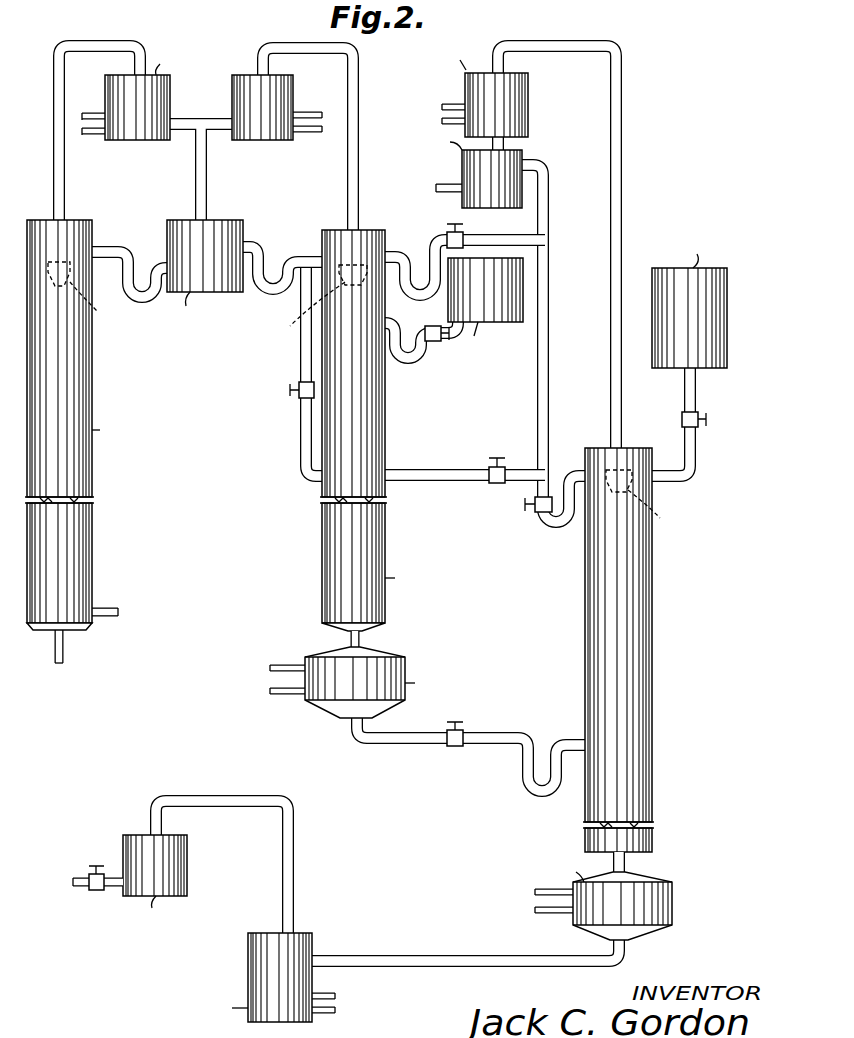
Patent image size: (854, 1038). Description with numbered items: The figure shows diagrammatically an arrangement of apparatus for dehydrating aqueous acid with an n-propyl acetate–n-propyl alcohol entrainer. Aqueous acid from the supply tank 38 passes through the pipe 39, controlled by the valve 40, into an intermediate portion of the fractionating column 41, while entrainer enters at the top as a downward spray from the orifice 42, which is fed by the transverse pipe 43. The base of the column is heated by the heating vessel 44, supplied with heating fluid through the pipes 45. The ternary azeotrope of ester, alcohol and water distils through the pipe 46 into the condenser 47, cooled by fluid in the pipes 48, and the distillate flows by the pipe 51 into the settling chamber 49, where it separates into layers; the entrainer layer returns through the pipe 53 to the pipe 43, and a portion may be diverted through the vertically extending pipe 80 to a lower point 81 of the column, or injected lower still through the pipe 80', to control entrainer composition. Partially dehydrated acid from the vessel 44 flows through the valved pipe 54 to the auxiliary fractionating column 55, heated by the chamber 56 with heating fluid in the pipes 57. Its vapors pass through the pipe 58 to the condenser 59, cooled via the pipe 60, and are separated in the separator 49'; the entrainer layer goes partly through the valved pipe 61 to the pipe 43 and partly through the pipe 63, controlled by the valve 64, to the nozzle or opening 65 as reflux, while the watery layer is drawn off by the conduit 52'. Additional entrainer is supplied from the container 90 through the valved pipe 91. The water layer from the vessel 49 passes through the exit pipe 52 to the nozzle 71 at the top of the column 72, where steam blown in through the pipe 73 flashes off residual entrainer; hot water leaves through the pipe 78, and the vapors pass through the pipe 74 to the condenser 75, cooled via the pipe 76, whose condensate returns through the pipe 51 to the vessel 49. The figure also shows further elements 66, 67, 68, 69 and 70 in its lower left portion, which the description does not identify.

The supply tank of aqueous acid 38 is at (466, 346).
The pipe 39 is at (428, 348).
The valve 40 is at (442, 348).
The fractionating column 41 is at (324, 554).
The orifice 42 is at (308, 308).
The transverse pipe 43 is at (314, 250).
The heating vessel 44 is at (324, 700).
The pipes 45 is at (262, 688).
The pipe 46 is at (348, 163).
The condenser 47 is at (268, 126).
The pipes 48 is at (307, 124).
The settling chamber 49 is at (210, 256).
The separator 49' is at (484, 167).
The pipe 51 is at (195, 163).
The exit pipe 52 is at (129, 254).
The conduit 52' is at (428, 186).
The pipe 53 is at (255, 244).
The valved pipe 54 is at (512, 743).
The auxiliary fractionating column 55 is at (592, 621).
The chamber 56 is at (664, 880).
The pipes 57 is at (530, 912).
The pipe 58 is at (622, 148).
The condenser 59 is at (522, 102).
The pipe 60 is at (444, 112).
The valved pipe 61 is at (478, 240).
The pipe 63 is at (549, 380).
The valve 64 is at (525, 506).
The nozzle or opening 65 is at (646, 513).
The pipe 66 is at (420, 958).
The redistillation still 67 is at (258, 950).
The heating connections 68 is at (334, 1004).
The vapor pipe 69 is at (282, 866).
The condenser 70 is at (180, 863).
The nozzle or opening 71 is at (90, 301).
The column 72 is at (90, 389).
The pipe 73 is at (106, 608).
The pipe 74 is at (114, 44).
The condenser 75 is at (132, 136).
The pipe 76 is at (94, 114).
The pipe 78 is at (63, 650).
The vertically extending pipe 80 is at (287, 369).
The pipe 80' is at (464, 492).
The lower point of column 81 is at (306, 490).
The container 90 is at (676, 362).
The valved pipe 91 is at (696, 446).